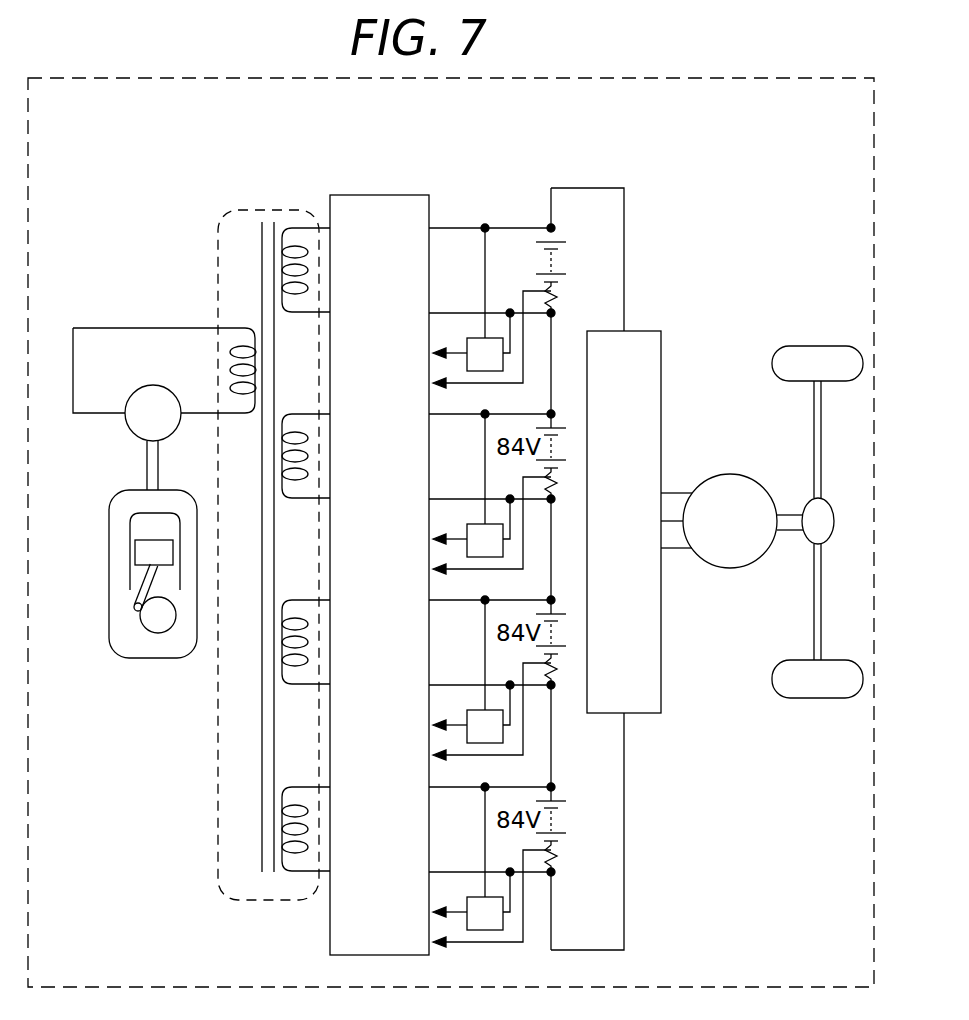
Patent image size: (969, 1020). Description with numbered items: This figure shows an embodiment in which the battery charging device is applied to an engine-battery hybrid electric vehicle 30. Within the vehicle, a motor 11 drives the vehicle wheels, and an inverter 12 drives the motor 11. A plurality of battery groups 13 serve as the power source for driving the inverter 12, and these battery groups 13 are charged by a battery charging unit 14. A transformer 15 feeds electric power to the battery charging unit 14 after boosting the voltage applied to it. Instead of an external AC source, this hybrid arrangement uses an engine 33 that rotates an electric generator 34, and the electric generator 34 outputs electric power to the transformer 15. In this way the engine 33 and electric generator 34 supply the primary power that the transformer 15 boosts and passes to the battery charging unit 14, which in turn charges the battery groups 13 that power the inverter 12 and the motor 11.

The motor 11 is at (742, 473).
The inverter 12 is at (661, 351).
The battery groups 13 is at (567, 254).
The battery charging unit 14 is at (395, 196).
The transformer 15 is at (270, 210).
The engine-battery hybrid electric vehicle 30 is at (703, 78).
The engine 33 is at (140, 660).
The electric generator 34 is at (155, 386).